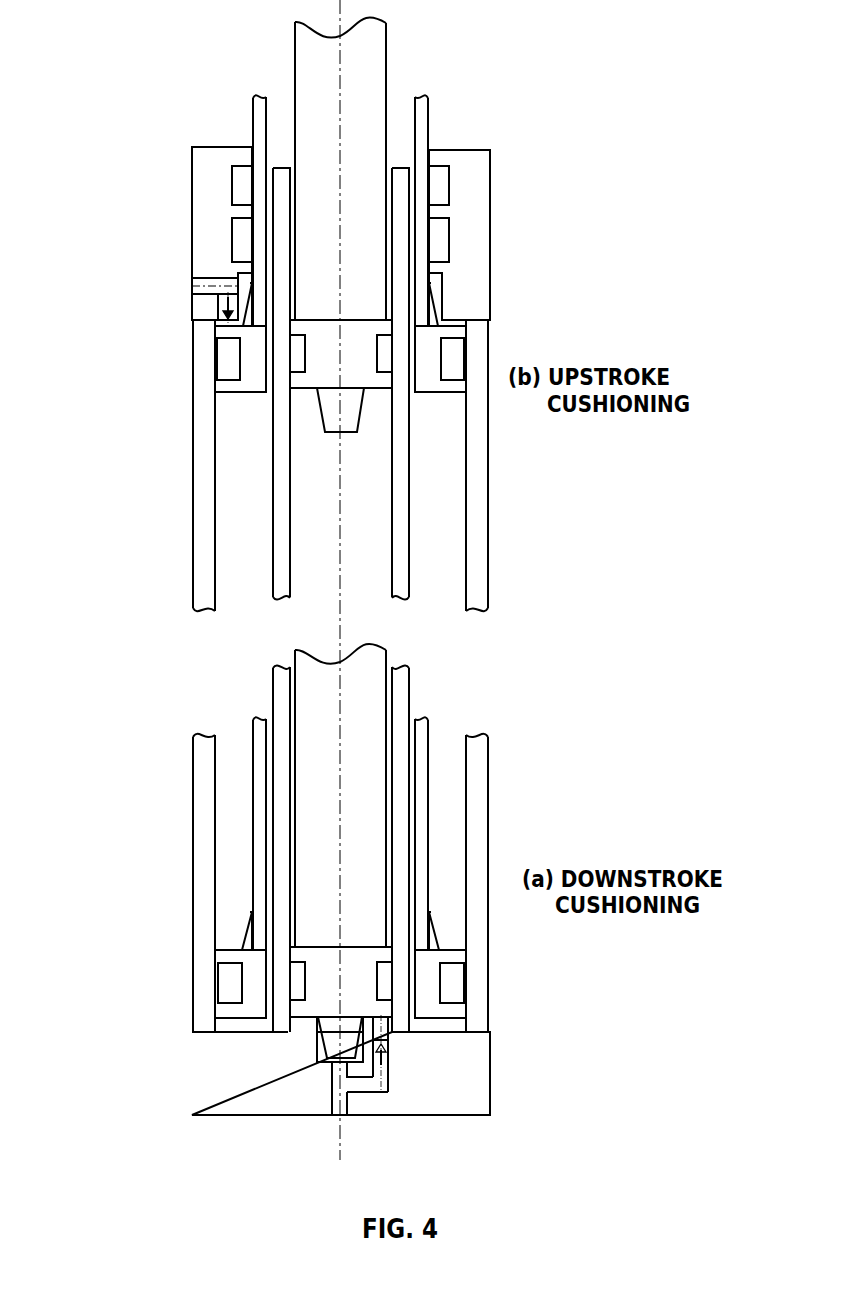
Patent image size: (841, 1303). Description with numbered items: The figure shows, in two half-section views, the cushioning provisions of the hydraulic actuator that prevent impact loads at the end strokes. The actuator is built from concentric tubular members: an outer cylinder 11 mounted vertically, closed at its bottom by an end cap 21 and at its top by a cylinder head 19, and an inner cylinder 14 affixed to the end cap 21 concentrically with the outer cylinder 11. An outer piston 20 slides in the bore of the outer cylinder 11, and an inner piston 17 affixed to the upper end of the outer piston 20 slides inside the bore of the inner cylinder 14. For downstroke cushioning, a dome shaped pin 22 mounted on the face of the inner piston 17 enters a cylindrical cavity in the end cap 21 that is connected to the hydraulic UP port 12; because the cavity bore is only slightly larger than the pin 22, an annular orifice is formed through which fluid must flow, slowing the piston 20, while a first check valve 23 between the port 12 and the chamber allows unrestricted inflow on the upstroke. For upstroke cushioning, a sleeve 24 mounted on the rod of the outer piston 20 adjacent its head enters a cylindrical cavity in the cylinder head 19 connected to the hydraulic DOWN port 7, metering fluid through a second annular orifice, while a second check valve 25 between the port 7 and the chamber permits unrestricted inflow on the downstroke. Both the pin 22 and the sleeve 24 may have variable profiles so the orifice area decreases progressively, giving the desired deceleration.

The hydraulic DOWN port 7 is at (192, 283).
The outer cylinder 11 is at (202, 472).
The hydraulic UP port 12 is at (333, 1113).
The inner cylinder 14 is at (400, 553).
The inner piston 17 is at (372, 58).
The cylinder head 19 is at (475, 217).
The outer piston 20 is at (255, 120).
The end cap 21 is at (202, 1092).
The dome shaped pin 22 is at (338, 1037).
The first check valve 23 is at (390, 1055).
The sleeve 24 is at (435, 320).
The second check valve 25 is at (218, 304).